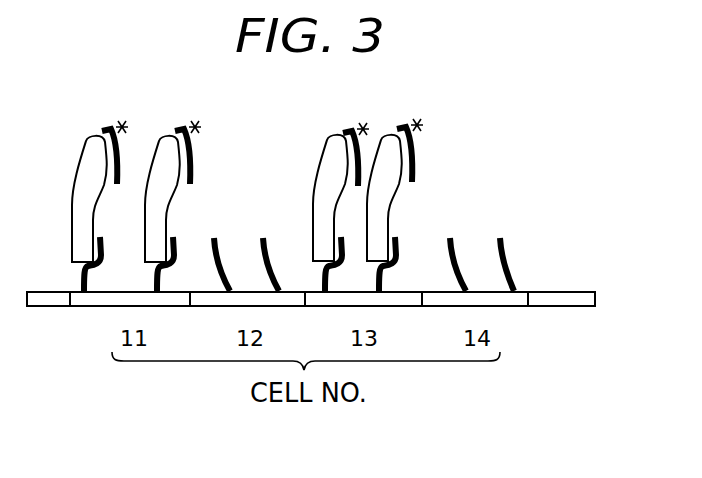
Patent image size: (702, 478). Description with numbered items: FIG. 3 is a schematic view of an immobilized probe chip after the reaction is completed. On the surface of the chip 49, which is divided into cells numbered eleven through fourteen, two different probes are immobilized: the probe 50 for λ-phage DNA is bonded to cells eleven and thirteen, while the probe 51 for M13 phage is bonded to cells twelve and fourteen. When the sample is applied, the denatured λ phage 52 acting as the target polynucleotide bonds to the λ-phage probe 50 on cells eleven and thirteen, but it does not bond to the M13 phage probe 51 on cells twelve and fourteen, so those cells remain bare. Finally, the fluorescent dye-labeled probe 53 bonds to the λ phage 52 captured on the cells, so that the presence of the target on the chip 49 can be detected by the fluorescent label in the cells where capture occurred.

The chip 49 is at (84, 297).
The probe for λ-phage DNA 50 is at (172, 248).
The probe for M13 phage 51 is at (457, 264).
The denatured λ phage 52 is at (322, 155).
The fluorescent dye-labeled probe 53 is at (410, 154).